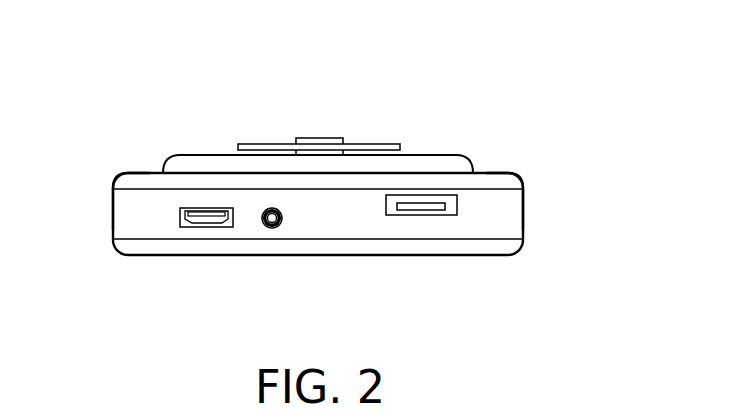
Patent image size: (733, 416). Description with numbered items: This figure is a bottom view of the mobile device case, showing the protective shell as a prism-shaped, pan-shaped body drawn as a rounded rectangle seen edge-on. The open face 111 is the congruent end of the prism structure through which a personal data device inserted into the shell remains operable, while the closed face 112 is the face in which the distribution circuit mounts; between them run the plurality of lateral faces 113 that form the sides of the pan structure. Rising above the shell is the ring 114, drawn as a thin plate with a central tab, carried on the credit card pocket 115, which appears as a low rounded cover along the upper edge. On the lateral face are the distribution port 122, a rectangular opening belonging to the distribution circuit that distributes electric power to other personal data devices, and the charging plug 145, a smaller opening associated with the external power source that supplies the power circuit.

The open face 111 is at (320, 255).
The closed face 112 is at (146, 173).
The lateral faces 113 is at (523, 213).
The ring 114 is at (375, 145).
The credit card pocket 115 is at (443, 155).
The distribution port 122 is at (445, 203).
The charging plug 145 is at (205, 218).